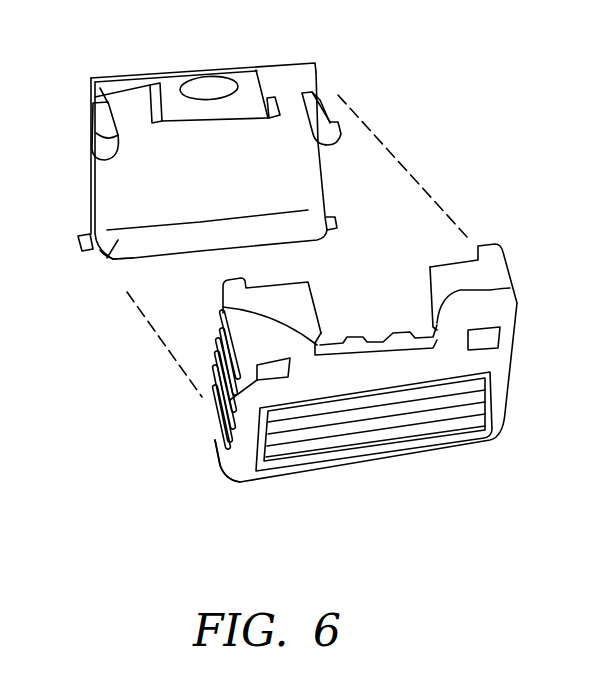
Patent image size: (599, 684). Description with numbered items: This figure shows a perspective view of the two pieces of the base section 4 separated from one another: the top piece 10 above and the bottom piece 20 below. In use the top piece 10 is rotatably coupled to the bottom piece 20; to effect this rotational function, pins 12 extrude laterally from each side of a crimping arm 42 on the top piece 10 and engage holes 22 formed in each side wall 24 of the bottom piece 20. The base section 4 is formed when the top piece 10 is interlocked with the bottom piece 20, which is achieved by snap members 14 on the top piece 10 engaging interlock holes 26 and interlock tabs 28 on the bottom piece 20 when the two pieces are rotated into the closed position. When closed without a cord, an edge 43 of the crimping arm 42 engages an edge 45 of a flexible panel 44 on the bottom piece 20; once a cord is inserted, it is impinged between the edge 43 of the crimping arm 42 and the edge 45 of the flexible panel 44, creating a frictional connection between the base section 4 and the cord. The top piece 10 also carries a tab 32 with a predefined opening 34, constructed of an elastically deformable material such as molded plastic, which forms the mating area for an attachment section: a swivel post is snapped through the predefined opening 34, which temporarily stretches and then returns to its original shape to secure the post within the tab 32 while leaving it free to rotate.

The base section 4 is at (233, 498).
The top piece 10 is at (117, 71).
The pins 12 is at (87, 240).
The snap members 14 is at (274, 106).
The bottom piece 20 is at (507, 424).
The holes 22 is at (213, 431).
The side wall 24 is at (223, 456).
The interlock holes 26 is at (256, 381).
The interlock tabs 28 is at (223, 307).
The tab 32 is at (247, 96).
The predefined opening 34 is at (202, 84).
The crimping arm 42 is at (113, 257).
The edge 43 is at (127, 266).
The flexible panel 44 is at (437, 414).
The edge 45 is at (383, 444).